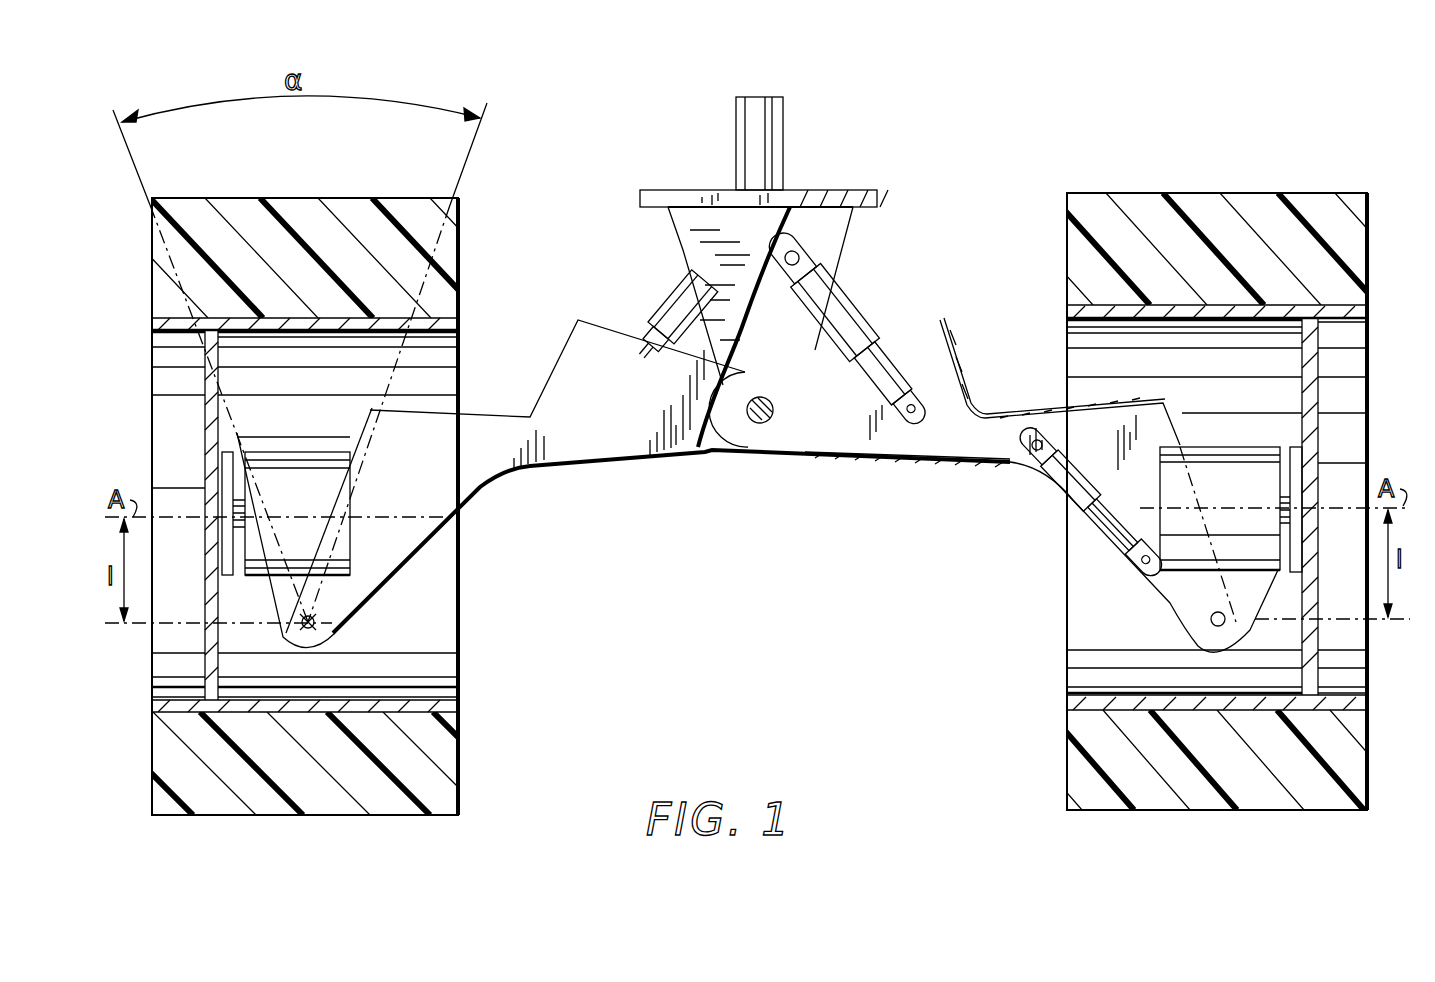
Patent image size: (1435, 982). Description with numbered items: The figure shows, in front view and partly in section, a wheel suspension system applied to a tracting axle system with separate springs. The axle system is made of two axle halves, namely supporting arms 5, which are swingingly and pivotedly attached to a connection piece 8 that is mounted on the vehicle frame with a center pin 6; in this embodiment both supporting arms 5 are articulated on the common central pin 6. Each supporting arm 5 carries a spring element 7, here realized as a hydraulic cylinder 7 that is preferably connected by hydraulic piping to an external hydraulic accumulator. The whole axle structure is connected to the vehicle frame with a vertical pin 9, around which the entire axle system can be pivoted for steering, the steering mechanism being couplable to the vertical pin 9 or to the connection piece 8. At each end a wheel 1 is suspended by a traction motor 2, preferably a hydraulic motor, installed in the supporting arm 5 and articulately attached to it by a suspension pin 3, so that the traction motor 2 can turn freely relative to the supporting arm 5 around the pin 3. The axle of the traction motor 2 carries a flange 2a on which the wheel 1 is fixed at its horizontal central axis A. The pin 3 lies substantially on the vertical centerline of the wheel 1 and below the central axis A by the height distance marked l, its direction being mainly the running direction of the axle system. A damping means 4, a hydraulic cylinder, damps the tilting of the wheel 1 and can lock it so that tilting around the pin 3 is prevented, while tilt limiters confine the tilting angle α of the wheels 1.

The wheel 1 is at (346, 207).
The traction motor 2 is at (318, 500).
The flange 2a is at (226, 462).
The suspension pin 3 is at (340, 632).
The damping means 4 is at (1062, 470).
The supporting arm 5 is at (580, 450).
The center pin 6 is at (768, 425).
The spring element 7 is at (673, 303).
The connection piece 8 is at (866, 205).
The vertical pin 9 is at (783, 113).